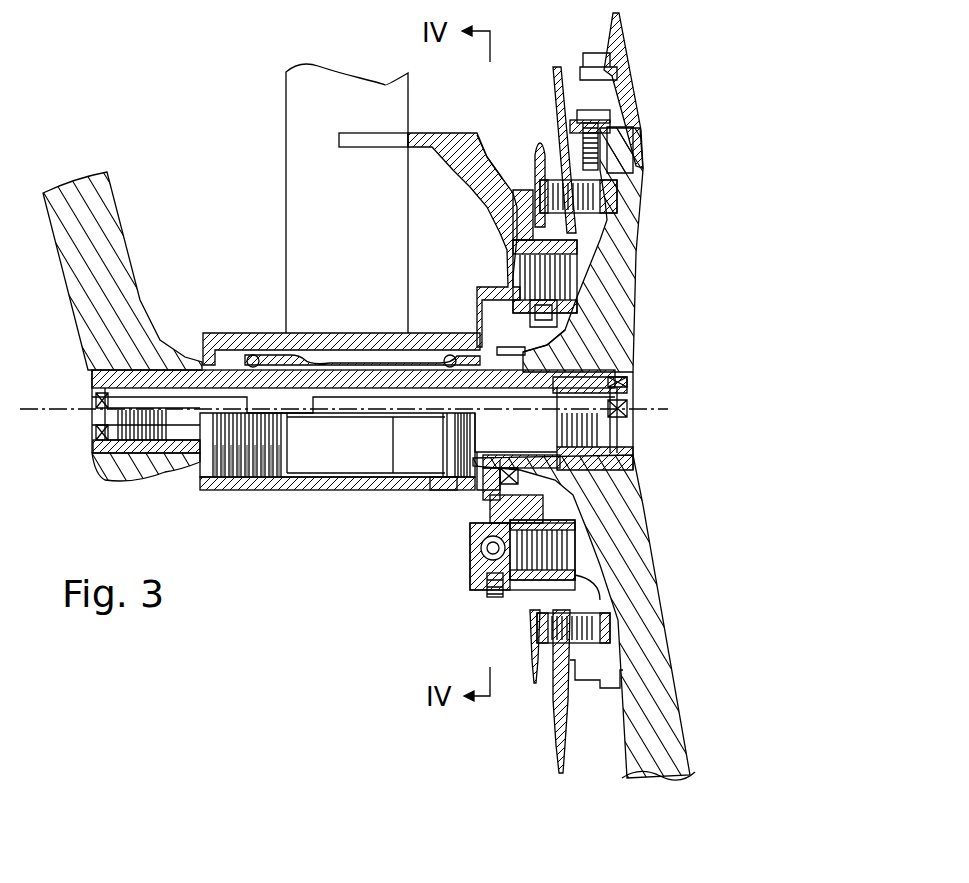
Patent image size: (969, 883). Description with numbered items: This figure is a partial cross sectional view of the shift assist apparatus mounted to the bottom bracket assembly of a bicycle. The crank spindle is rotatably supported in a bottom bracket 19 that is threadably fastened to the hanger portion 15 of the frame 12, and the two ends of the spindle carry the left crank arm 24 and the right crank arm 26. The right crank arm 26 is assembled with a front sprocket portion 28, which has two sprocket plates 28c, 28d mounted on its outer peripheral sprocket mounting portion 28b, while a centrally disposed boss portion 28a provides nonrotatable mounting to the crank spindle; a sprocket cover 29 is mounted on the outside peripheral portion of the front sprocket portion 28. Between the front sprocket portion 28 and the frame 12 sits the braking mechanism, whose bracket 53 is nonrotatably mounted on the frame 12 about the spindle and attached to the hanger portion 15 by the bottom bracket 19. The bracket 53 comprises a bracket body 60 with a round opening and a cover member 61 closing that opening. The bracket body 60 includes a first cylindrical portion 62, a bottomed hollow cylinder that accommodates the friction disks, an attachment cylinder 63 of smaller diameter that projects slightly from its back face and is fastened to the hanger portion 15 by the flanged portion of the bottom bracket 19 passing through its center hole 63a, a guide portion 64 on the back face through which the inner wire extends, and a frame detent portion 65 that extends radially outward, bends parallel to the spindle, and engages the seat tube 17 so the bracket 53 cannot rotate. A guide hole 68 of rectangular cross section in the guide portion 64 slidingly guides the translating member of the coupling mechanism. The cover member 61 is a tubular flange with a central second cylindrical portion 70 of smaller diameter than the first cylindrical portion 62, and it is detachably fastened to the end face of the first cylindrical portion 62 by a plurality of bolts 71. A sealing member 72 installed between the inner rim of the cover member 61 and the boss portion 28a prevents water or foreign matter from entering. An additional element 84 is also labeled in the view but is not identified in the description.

The frame 12 is at (257, 157).
The hanger portion 15 is at (422, 337).
The seat tube 17 is at (397, 233).
The bottom bracket 19 is at (265, 333).
The left crank arm 24 is at (108, 241).
The right crank arm 26 is at (650, 553).
The front sprocket portion 28 is at (616, 338).
The boss portion 28a is at (557, 360).
The sprocket mounting portion 28b is at (600, 218).
The sprocket plate 28c is at (558, 757).
The sprocket plate 28d is at (537, 680).
The sprocket cover 29 is at (633, 43).
The bracket 53 is at (486, 160).
The bracket body 60 is at (506, 180).
The cover member 61 is at (577, 533).
The first cylindrical portion 62 is at (523, 600).
The attachment cylinder 63 is at (477, 285).
The center hole 63a is at (473, 477).
The guide portion 64 is at (470, 580).
The frame detent portion 65 is at (455, 133).
The guide hole 68 is at (473, 563).
The second cylindrical portion 70 is at (560, 520).
The bolts 71 is at (580, 587).
The sealing member 72 is at (537, 477).
The seal 84 is at (513, 353).